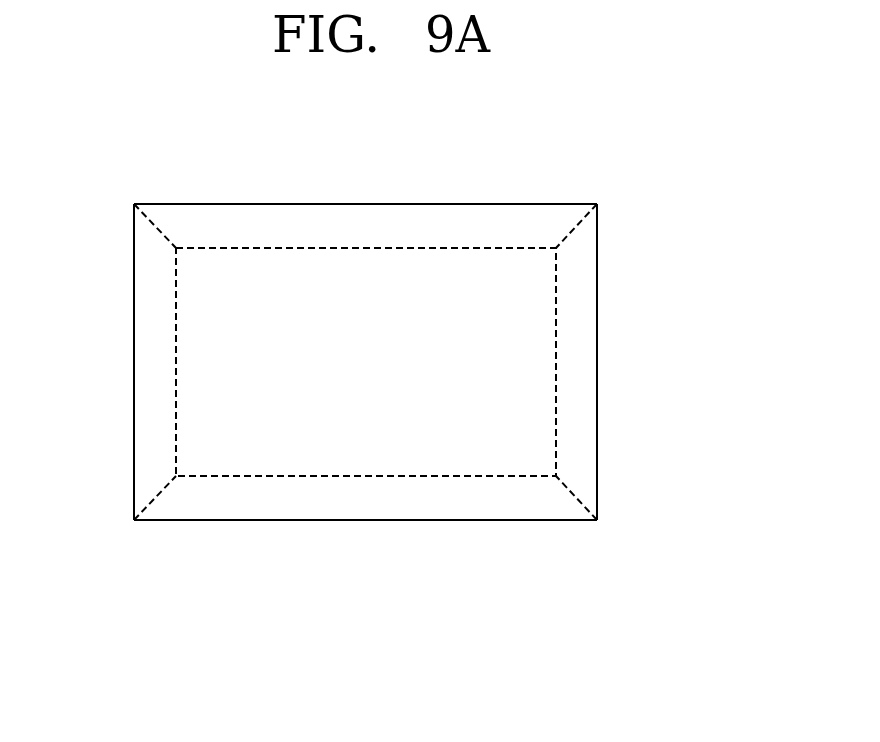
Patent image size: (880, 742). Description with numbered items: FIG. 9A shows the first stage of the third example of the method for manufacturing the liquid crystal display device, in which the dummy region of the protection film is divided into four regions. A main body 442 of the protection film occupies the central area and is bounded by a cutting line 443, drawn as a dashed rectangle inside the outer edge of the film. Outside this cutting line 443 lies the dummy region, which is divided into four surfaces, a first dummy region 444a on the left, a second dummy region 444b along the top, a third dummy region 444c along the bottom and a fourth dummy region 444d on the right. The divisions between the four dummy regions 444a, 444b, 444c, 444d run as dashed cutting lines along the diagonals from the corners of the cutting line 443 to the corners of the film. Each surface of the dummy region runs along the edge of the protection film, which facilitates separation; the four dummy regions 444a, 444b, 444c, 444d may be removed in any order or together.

The display region / inner panel 442 is at (523, 300).
The folding line (dashed boundary) 443 is at (455, 248).
The left side flap portion 444a is at (143, 370).
The top side flap portion 444b is at (350, 212).
The bottom side flap portion 444c is at (323, 505).
The right side flap portion 444d is at (573, 381).